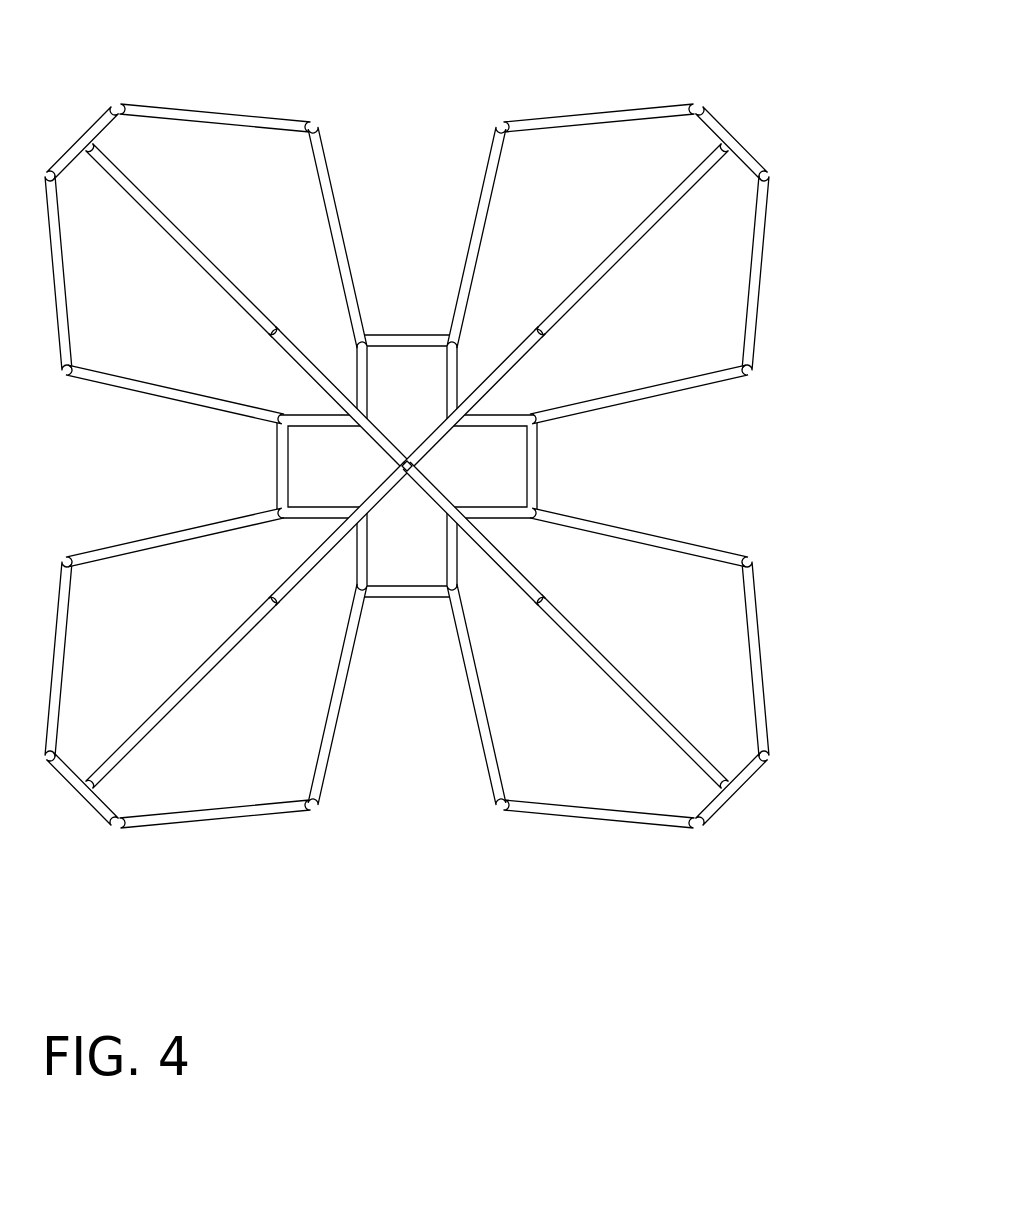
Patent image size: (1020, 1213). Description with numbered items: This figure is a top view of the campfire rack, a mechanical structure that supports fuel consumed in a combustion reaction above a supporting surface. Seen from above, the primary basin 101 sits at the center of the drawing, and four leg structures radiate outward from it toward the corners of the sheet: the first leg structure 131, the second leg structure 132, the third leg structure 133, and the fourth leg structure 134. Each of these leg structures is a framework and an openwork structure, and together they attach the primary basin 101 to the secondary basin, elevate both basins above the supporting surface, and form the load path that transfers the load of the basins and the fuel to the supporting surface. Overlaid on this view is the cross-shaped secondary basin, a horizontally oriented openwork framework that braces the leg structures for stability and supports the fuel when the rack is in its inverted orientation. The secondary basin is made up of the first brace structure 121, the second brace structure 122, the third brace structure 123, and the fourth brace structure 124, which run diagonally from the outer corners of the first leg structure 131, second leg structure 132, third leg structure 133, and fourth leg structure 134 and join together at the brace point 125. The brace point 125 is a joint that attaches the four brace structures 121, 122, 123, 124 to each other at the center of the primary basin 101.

The primary basin 101 is at (548, 468).
The first brace structure 121 is at (388, 443).
The second brace structure 122 is at (433, 452).
The third brace structure 123 is at (432, 497).
The fourth brace structure 124 is at (380, 487).
The brace point 125 is at (405, 475).
The first leg structure 131 is at (96, 108).
The second leg structure 132 is at (735, 105).
The third leg structure 133 is at (772, 686).
The fourth leg structure 134 is at (215, 822).